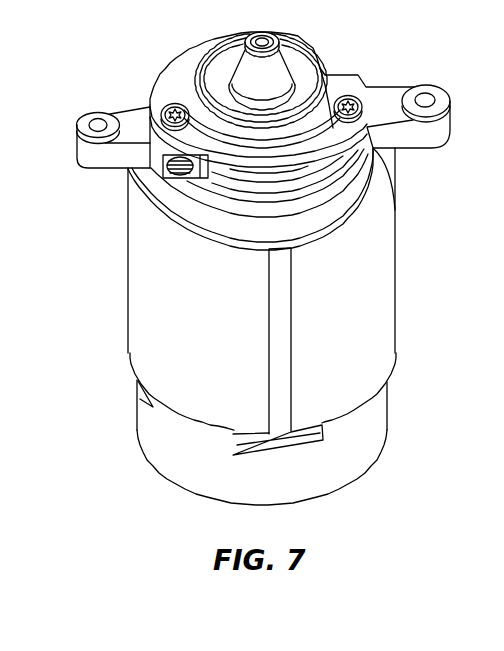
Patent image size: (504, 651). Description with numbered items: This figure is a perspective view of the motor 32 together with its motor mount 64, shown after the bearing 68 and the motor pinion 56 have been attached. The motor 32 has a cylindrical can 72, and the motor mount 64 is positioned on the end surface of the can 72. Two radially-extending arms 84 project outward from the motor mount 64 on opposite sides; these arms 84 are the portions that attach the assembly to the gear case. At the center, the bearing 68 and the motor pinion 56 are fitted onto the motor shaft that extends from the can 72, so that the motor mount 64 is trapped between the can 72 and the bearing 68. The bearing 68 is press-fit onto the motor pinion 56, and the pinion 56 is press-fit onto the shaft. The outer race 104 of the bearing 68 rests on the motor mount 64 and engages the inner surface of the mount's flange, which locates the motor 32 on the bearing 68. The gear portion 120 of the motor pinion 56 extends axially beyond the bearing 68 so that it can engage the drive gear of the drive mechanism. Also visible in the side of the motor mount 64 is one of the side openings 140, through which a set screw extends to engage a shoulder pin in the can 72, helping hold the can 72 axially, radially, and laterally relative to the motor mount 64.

The motor 32 is at (373, 340).
The motor pinion 56 is at (244, 64).
The motor mount 64 is at (322, 168).
The bearing 68 is at (318, 58).
The can 72 is at (150, 315).
The radially-extending arms 84 is at (127, 115).
The outer race 104 is at (217, 60).
The gear portion 120 is at (278, 33).
The side openings 140 is at (185, 174).